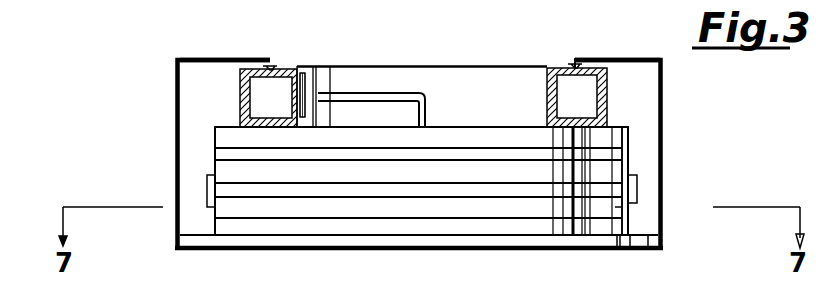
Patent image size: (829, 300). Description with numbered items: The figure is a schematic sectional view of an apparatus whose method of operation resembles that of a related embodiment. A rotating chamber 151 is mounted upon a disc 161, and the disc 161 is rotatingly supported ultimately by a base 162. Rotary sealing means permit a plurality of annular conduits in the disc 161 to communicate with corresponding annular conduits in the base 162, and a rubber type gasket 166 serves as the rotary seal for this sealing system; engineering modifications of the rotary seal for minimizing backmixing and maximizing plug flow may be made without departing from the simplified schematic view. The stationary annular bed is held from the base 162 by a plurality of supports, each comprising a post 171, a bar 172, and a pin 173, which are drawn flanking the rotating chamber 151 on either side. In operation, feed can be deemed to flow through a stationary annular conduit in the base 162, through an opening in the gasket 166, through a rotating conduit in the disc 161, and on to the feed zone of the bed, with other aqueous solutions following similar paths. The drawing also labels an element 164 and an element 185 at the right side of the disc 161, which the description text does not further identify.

The post 171 is at (175, 96).
The bar 172 is at (193, 58).
The pin 173 is at (270, 66).
The rotating chamber 151 is at (545, 87).
The disc 161 is at (614, 127).
The end plate 164 is at (617, 170).
The rubber type gasket 166 is at (634, 192).
The lead 185 is at (615, 207).
The base 162 is at (648, 242).